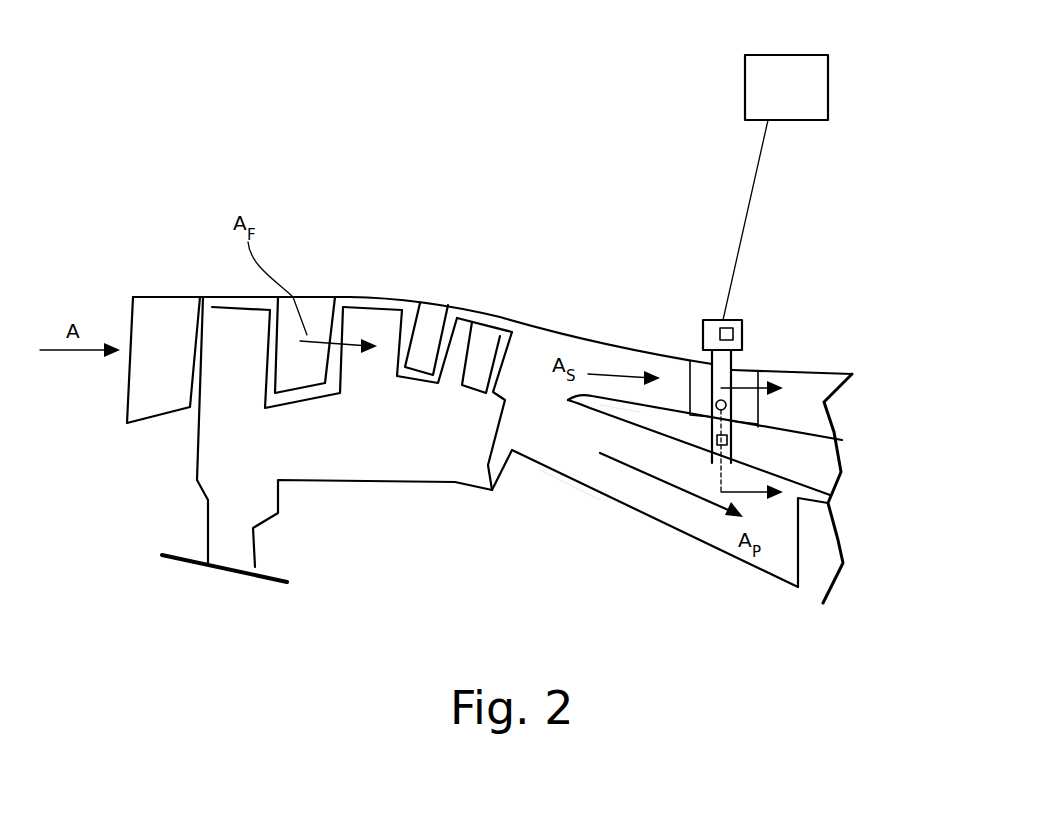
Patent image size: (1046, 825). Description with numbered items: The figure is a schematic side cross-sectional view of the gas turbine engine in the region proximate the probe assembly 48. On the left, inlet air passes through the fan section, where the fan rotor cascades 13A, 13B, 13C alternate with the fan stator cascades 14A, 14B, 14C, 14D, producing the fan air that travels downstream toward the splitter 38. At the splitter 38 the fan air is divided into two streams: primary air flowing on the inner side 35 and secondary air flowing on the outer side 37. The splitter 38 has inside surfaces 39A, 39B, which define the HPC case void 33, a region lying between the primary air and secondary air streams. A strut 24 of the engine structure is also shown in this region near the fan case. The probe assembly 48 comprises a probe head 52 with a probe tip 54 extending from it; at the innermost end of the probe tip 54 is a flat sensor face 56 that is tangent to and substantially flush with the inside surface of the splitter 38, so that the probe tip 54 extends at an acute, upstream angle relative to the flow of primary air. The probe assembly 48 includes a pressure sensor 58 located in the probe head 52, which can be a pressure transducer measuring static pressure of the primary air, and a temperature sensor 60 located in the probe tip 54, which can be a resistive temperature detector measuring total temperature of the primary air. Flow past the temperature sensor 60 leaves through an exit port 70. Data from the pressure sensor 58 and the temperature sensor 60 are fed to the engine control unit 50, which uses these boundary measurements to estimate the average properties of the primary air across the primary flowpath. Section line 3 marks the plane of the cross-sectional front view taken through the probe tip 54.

The fan rotor cascade 13A is at (237, 377).
The fan rotor cascade 13B is at (372, 360).
The fan rotor cascade 13C is at (458, 370).
The fan stator cascade 14A is at (163, 322).
The fan stator cascade 14B is at (308, 297).
The fan stator cascade 14C is at (433, 302).
The fan stator cascade 14D is at (518, 332).
The strut 24 is at (740, 373).
The HPC case void 33 is at (813, 466).
The inner side 35 is at (588, 462).
The outer side 37 is at (587, 340).
The splitter 38 is at (568, 400).
The inside surface 39A is at (619, 417).
The inside surface 39B is at (600, 453).
The probe assembly 48 is at (714, 306).
The engine control unit 50 is at (793, 55).
The probe head 52 is at (742, 320).
The probe tip 54 is at (712, 400).
The sensor face 56 is at (716, 441).
The pressure sensor 58 is at (733, 333).
The temperature sensor 60 is at (640, 403).
The exit port 70 is at (840, 434).
The section line 3- 3 is at (760, 442).